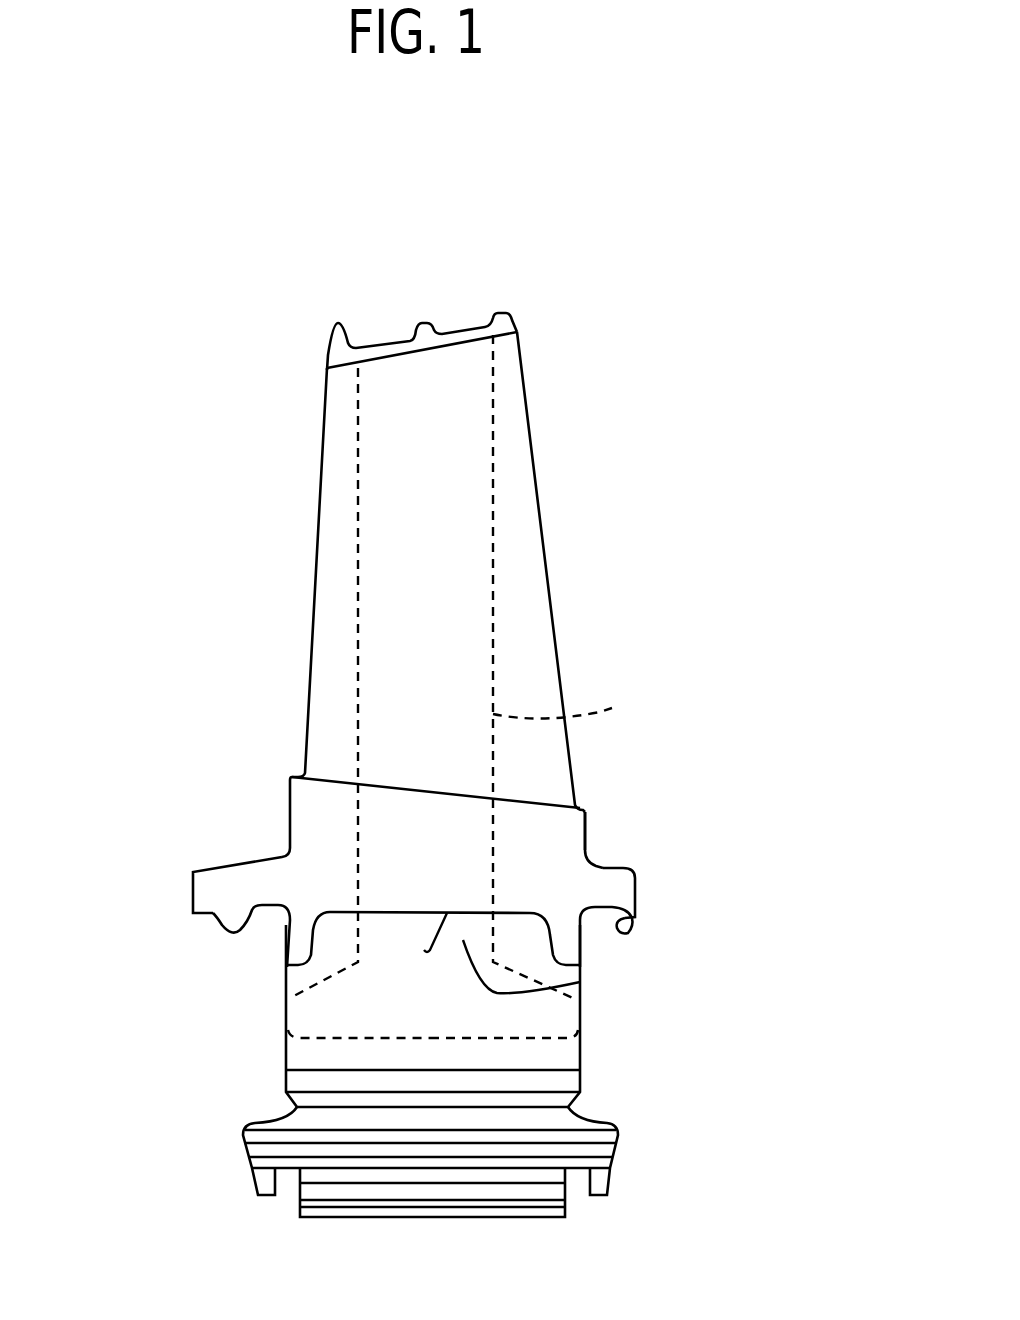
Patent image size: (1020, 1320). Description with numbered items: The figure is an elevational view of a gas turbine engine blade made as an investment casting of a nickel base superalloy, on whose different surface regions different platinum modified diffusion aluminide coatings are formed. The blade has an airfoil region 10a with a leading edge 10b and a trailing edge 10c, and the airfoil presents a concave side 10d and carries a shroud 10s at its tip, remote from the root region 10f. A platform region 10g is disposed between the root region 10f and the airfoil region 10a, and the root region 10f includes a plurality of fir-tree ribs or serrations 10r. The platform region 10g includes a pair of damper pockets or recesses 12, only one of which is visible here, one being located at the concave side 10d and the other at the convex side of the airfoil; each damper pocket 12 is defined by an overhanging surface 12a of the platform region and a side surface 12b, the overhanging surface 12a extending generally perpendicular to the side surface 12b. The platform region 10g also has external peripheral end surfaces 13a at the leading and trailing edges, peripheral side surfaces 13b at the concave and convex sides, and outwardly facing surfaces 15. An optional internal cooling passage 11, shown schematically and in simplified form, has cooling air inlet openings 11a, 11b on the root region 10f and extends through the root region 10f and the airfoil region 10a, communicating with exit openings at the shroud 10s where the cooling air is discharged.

The airfoil region 10a is at (393, 508).
The leading edge 10b is at (313, 532).
The trailing edge 10c is at (542, 538).
The concave side 10d is at (389, 421).
The shroud 10s is at (514, 316).
The platform region 10g is at (262, 856).
The root region 10f is at (284, 1060).
The fir-tree ribs or serrations 10r is at (567, 1073).
The internal cooling passage 11 is at (612, 708).
The cooling air inlet opening 11a is at (285, 1022).
The cooling air inlet opening 11b is at (580, 1020).
The damper pocket 12 is at (394, 940).
The overhanging surface 12a is at (424, 950).
The side surface 12b is at (580, 982).
The peripheral end surface 13a is at (193, 895).
The peripheral side surface 13b is at (593, 878).
The outwardly facing surface 15 is at (283, 960).